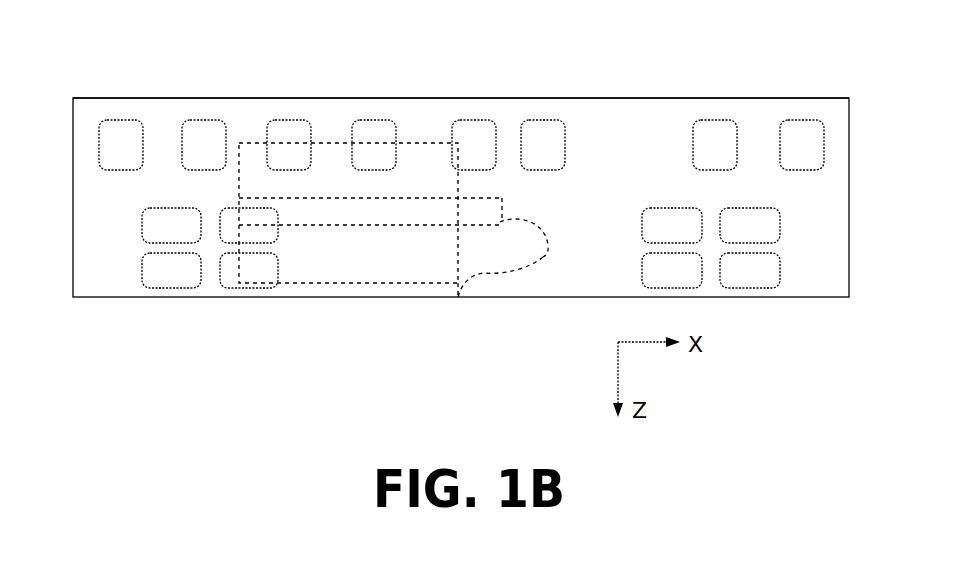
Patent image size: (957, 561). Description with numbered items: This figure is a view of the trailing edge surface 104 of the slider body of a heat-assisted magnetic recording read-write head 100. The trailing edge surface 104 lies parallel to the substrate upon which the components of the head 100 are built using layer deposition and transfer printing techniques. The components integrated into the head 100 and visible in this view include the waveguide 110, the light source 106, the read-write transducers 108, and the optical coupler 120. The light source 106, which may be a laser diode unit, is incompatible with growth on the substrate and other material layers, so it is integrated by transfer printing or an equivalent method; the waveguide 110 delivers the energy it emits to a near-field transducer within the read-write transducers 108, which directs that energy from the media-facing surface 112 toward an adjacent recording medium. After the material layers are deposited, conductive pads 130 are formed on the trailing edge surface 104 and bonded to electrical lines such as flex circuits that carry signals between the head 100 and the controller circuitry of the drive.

The read-write head 100 is at (520, 73).
The trailing edge surface 104 is at (170, 104).
The light source 106 is at (347, 284).
The read-write transducers 108 is at (452, 321).
The waveguide 110 is at (543, 257).
The media-facing surface 112 is at (246, 298).
The optical coupler 120 is at (499, 222).
The conductive pads 130 is at (363, 118).